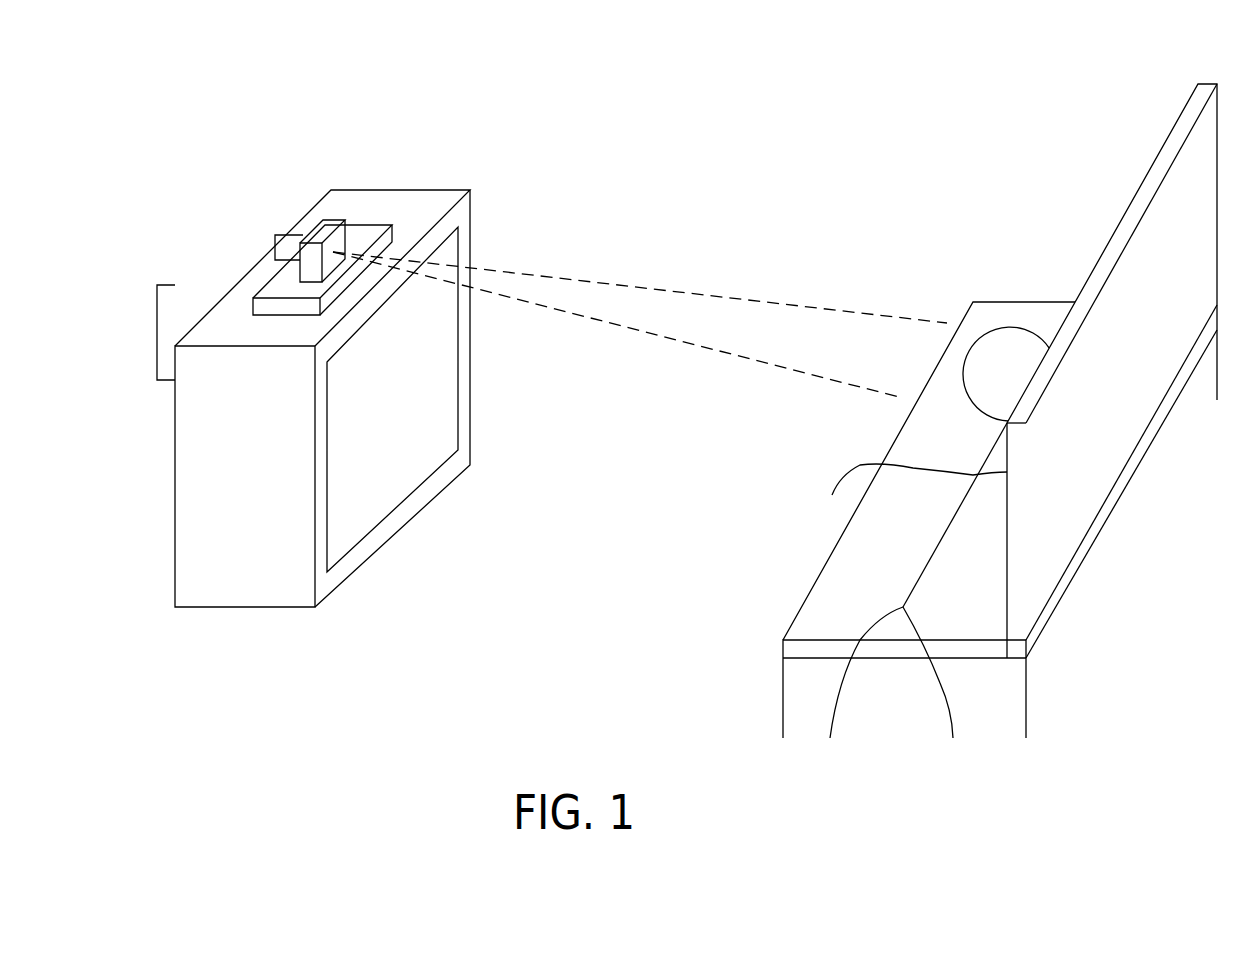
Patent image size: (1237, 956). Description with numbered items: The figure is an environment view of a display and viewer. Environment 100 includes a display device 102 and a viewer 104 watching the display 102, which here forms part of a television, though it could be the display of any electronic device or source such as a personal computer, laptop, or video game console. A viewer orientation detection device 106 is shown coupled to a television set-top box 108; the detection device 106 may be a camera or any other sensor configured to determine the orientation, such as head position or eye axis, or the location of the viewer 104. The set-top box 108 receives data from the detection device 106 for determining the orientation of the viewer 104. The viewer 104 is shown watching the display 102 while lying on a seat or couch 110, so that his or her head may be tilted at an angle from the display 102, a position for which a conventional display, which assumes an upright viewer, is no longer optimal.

The environment 100 is at (748, 153).
The display device 102 is at (383, 467).
The viewer 104 is at (922, 502).
The viewer orientation detection device 106 is at (320, 237).
The television set-top box 108 is at (285, 287).
The seat or couch 110 is at (1182, 192).